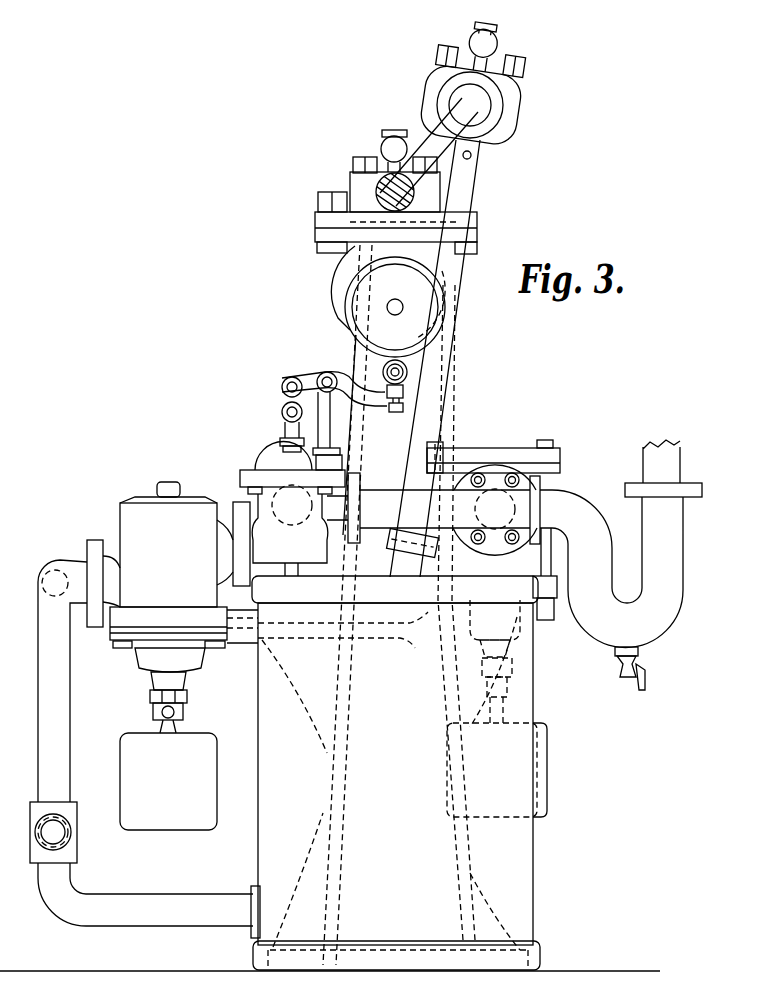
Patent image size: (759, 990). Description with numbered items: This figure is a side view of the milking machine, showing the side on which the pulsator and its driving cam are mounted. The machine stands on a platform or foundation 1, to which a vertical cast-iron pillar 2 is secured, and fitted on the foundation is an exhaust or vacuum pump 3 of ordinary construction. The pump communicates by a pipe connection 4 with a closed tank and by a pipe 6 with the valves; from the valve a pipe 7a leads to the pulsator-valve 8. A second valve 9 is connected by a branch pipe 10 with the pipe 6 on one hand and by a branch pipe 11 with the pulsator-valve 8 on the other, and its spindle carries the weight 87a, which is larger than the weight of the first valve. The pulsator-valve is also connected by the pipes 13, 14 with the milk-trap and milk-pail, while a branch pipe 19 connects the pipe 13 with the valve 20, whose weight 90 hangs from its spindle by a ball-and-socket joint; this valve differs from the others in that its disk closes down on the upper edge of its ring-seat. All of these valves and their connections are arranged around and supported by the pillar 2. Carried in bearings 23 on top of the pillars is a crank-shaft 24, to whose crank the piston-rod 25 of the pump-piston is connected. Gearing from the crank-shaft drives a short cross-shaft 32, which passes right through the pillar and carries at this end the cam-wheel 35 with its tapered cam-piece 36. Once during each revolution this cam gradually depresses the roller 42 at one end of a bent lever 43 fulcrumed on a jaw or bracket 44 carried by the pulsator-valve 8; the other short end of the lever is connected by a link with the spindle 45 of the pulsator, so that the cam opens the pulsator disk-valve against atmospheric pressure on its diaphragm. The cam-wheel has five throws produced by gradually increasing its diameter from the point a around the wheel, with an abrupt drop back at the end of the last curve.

The platform or foundation 1 is at (559, 973).
The vertical cast-iron pillar 2 is at (404, 544).
The exhaust or vacuum pump 3 is at (396, 607).
The pipe connection 4 is at (167, 882).
The pipe 6 is at (340, 318).
The pipe 7a is at (297, 527).
The pulsator-valve 8 is at (278, 460).
The valve 9 is at (180, 607).
The branch pipe 10 is at (113, 565).
The branch pipe 11 is at (223, 530).
The pipe 13 is at (557, 497).
The pipe 14 is at (667, 447).
The branch pipe 19 is at (490, 472).
The valve 20 is at (460, 465).
The bearing 23 is at (396, 192).
The crank-shaft 24 is at (455, 111).
The piston-rod 25 is at (443, 350).
The short cross-shaft 32 is at (403, 302).
The cam-wheel 35 is at (395, 307).
The cam-piece 36 is at (337, 283).
The roller 42 is at (385, 367).
The bent lever 43 is at (375, 403).
The jaw or bracket 44 is at (330, 433).
The spindle 45 is at (283, 421).
The weight 87a is at (168, 781).
The weight 90 is at (540, 768).
The point a is at (453, 310).